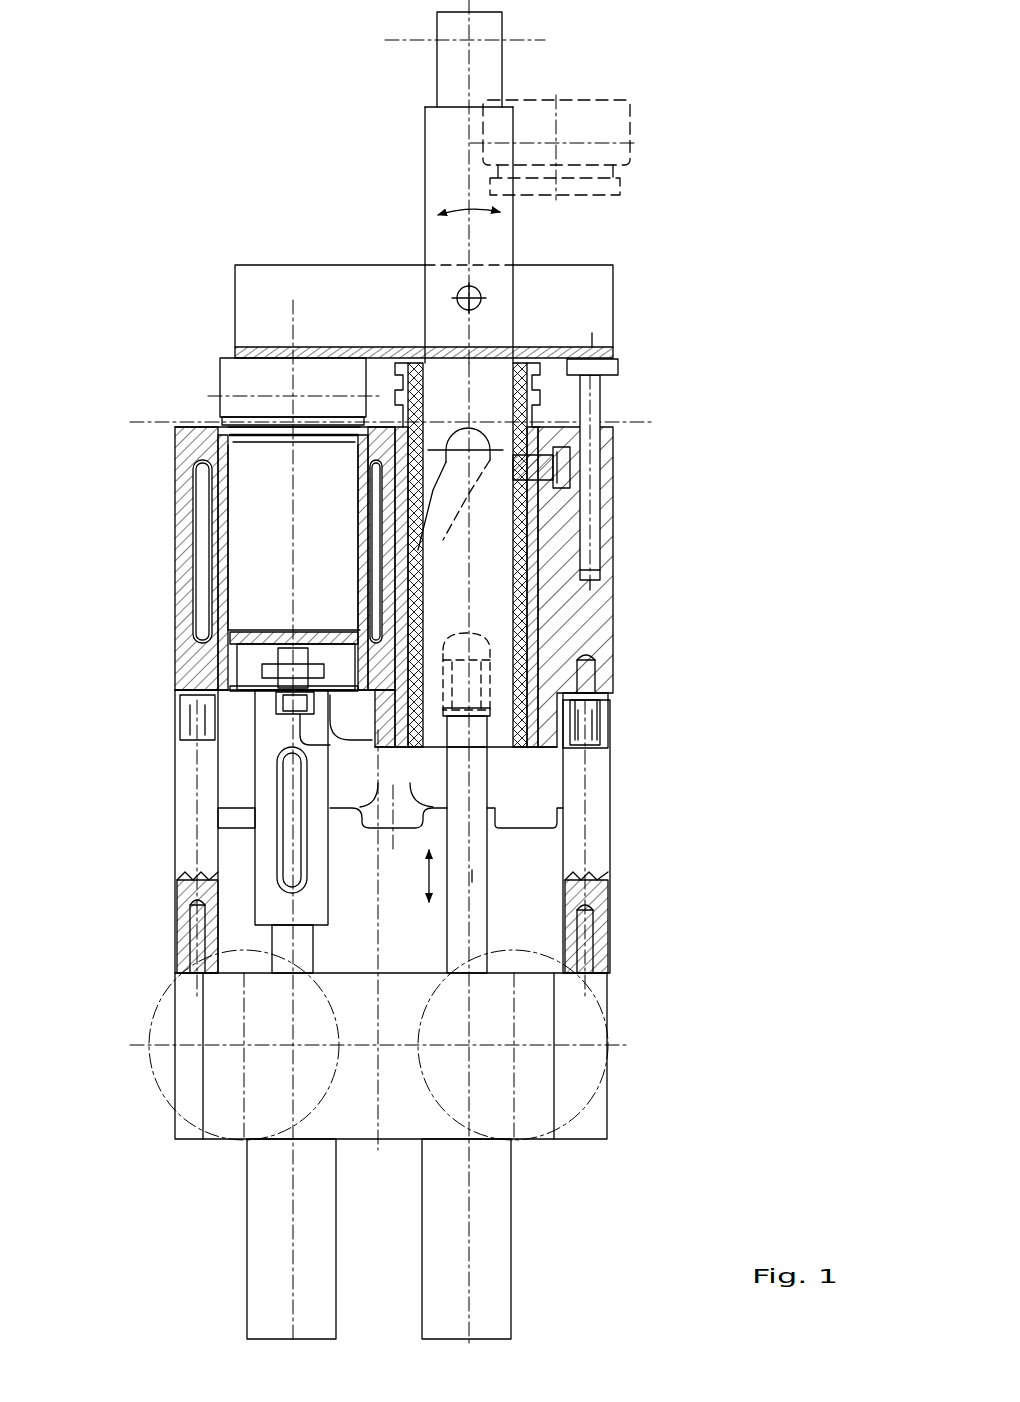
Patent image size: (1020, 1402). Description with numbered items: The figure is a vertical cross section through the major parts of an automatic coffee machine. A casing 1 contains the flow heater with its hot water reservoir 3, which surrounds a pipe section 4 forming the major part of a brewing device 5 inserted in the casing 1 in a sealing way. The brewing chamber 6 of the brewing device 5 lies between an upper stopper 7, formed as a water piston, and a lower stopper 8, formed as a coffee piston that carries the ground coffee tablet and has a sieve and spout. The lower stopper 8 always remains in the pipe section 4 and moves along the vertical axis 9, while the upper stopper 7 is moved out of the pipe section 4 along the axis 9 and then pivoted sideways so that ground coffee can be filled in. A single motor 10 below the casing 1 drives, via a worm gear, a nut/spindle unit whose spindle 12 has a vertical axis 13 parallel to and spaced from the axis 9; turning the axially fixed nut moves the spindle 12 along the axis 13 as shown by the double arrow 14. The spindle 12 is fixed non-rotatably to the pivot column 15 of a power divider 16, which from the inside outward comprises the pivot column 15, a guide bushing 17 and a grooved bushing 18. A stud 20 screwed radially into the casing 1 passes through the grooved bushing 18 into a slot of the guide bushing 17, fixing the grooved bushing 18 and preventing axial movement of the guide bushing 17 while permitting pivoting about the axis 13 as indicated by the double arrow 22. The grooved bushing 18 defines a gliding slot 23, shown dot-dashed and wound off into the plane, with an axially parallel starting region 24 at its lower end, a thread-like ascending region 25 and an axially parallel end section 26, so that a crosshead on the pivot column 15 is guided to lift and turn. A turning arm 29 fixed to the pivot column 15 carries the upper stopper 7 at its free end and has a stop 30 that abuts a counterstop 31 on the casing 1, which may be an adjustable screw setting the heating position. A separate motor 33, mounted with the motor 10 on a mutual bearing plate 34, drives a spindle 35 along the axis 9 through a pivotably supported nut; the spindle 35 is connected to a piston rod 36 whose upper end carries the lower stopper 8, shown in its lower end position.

The casing 1 is at (184, 518).
The hot water reservoir 3 is at (370, 532).
The pipe section 4 is at (220, 593).
The brewing device 5 is at (169, 396).
The brewing chamber 6 is at (250, 478).
The upper stopper 7 is at (250, 405).
The lower stopper 8 is at (250, 668).
The vertical axis 9 is at (291, 602).
The motor 10 is at (587, 1111).
The spindle 12 is at (430, 878).
The vertical axis 13 is at (467, 840).
The double arrow 14 is at (592, 1046).
The pivot column 15 is at (487, 517).
The power divider 16 is at (540, 617).
The guide bushing 17 is at (520, 627).
The grooved bushing 18 is at (530, 663).
The stud 20 is at (553, 463).
The double arrow 22 is at (555, 187).
The gliding slot 23 is at (487, 490).
The starting region 24 is at (295, 726).
The ascending region 25 is at (561, 537).
The end section 26 is at (487, 442).
The turning arm 29 is at (338, 292).
The stop 30 is at (638, 311).
The counterstop 31 is at (615, 358).
The motor 33 is at (160, 1000).
The bearing plate 34 is at (296, 1228).
The spindle 35 is at (285, 938).
The piston rod 36 is at (271, 814).